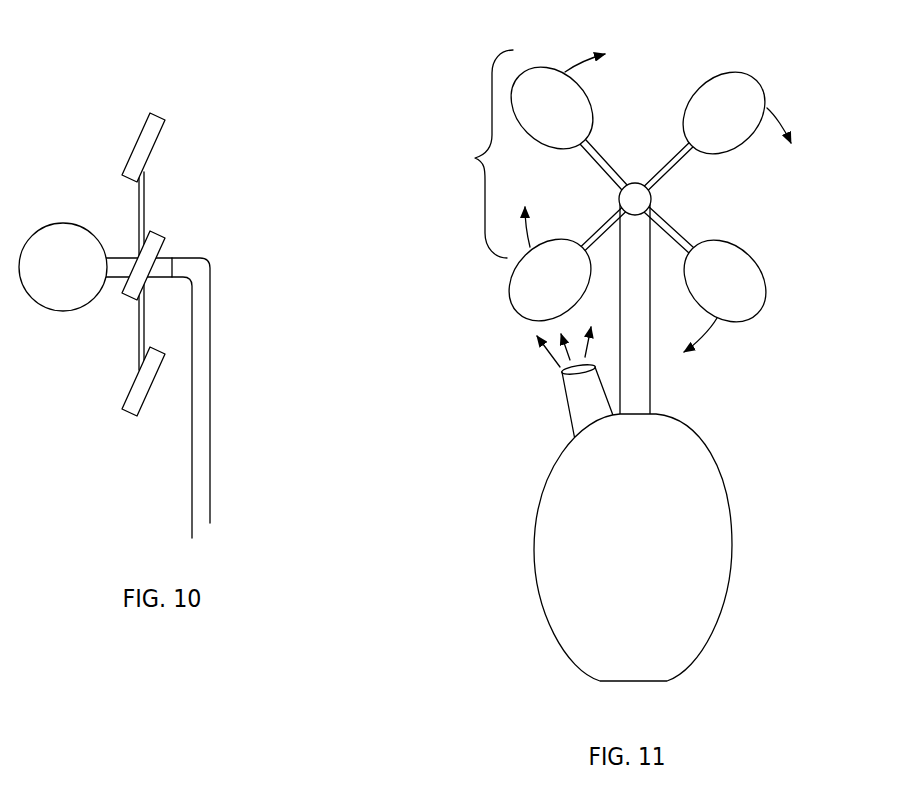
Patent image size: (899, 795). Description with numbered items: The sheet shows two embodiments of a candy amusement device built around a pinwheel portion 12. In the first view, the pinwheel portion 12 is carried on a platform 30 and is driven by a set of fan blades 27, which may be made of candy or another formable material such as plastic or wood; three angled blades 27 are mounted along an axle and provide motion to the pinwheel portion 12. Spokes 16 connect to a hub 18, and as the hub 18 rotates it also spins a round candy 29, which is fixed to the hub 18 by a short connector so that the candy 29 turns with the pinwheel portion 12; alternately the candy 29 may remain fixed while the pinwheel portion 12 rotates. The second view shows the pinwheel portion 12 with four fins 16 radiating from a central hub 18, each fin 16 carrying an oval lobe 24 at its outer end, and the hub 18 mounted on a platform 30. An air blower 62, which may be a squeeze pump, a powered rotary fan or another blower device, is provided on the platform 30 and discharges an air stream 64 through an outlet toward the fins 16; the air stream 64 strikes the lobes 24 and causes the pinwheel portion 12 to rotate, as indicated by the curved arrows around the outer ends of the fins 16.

In FIG. 10, the pinwheel portion 12 is at (174, 224).
In FIG. 11, the pinwheel portion 12 is at (475, 158).
In FIG. 11, the spokes or fins 16 is at (608, 163).
In FIG. 10, the central hub 18 is at (108, 282).
In FIG. 11, the balloon members 24 is at (710, 75).
In FIG. 10, the fan blades 27 is at (160, 145).
In FIG. 10, the candy 29 is at (42, 223).
In FIG. 10, the platform 30 is at (212, 428).
In FIG. 11, the platform 30 is at (650, 372).
In FIG. 11, the air blower 62 is at (640, 595).
In FIG. 11, the air stream 64 is at (557, 367).